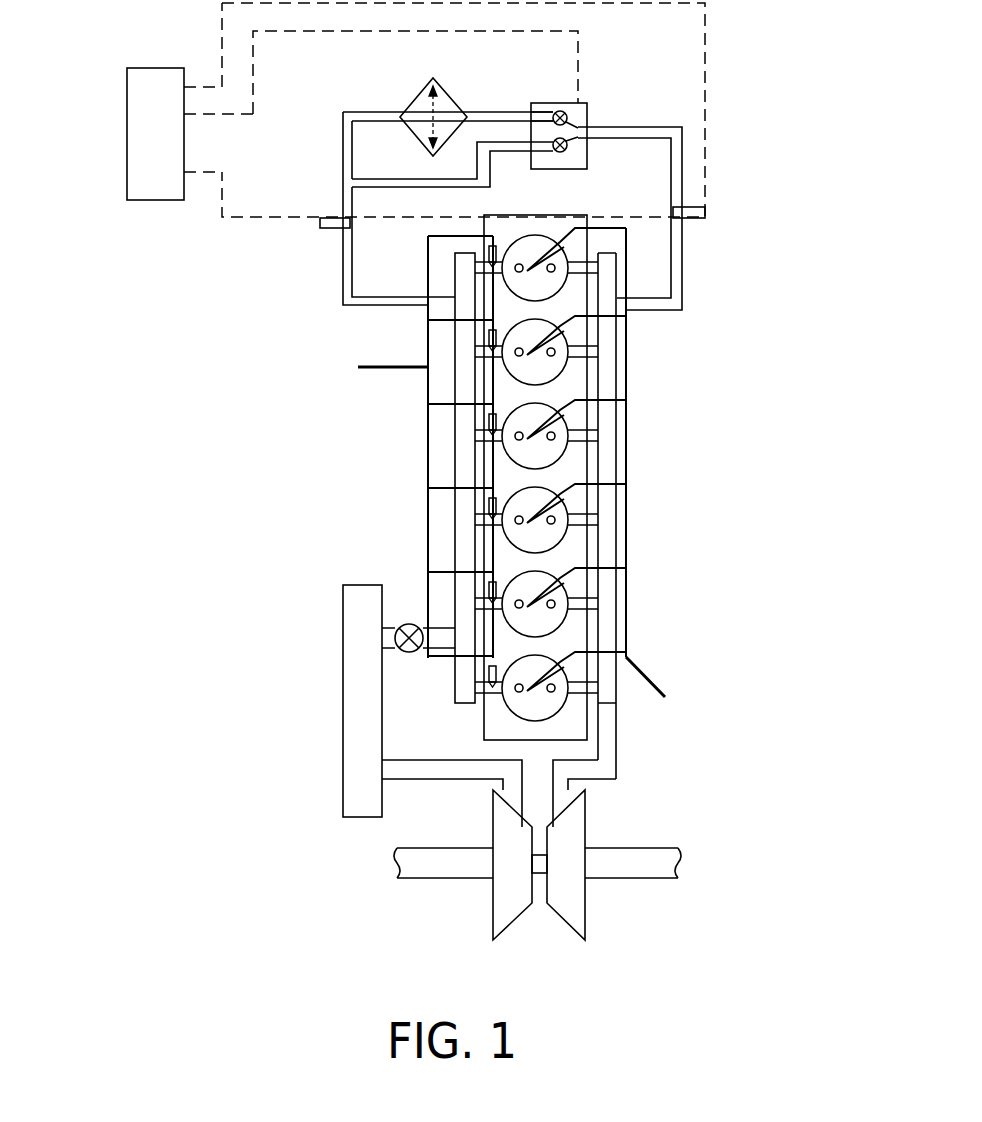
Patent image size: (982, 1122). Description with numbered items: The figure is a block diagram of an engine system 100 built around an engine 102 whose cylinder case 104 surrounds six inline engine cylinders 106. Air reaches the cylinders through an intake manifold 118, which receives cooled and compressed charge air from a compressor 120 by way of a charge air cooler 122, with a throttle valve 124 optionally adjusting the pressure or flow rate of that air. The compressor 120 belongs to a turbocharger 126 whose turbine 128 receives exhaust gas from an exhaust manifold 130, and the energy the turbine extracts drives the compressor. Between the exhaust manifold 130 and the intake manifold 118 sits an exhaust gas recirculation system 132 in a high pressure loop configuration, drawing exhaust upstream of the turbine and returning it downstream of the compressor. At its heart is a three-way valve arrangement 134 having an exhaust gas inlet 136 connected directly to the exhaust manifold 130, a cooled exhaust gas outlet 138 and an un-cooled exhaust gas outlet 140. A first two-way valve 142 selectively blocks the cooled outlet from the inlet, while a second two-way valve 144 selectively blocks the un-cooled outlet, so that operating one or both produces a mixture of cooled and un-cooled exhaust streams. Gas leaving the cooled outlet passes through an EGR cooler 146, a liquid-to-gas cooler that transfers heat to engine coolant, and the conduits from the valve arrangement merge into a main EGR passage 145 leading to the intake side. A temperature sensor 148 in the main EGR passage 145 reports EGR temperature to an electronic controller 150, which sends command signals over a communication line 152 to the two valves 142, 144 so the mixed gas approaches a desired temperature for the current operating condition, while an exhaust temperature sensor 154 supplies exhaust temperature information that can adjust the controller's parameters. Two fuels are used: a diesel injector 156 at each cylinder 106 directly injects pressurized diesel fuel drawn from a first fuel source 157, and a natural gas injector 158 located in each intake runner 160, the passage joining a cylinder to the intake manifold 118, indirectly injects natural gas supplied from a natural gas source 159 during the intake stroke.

The engine system 100 is at (790, 72).
The engine 102 is at (698, 400).
The cylinder case 104 is at (493, 388).
The engine cylinders 106 is at (553, 537).
The intake manifold 118 is at (467, 347).
The compressor 120 is at (493, 907).
The charge air cooler 122 is at (343, 614).
The throttle valve 124 is at (409, 623).
The turbocharger 126 is at (559, 856).
The turbine 128 is at (585, 906).
The exhaust manifold 130 is at (607, 632).
The exhaust gas recirculation (EGR) system 132 is at (593, 68).
The three-way valve arrangement 134 is at (588, 105).
The exhaust gas inlet 136 is at (590, 133).
The cooled exhaust gas outlet 138 is at (533, 112).
The un-cooled exhaust gas outlet 140 is at (532, 148).
The first two-way valve 142 is at (564, 103).
The second two-way valve 144 is at (558, 170).
The main EGR passage 145 is at (342, 190).
The EGR cooler 146 is at (405, 100).
The temperature sensor 148 is at (333, 229).
The electronic controller 150 is at (127, 133).
The communication line 152 is at (255, 72).
The exhaust temperature sensor 154 is at (690, 218).
The diesel injector 156 is at (560, 593).
The first fuel source 157 is at (687, 694).
The natural gas injector 158 is at (488, 422).
The natural gas source 159 is at (348, 374).
The intake runner 160 is at (486, 438).